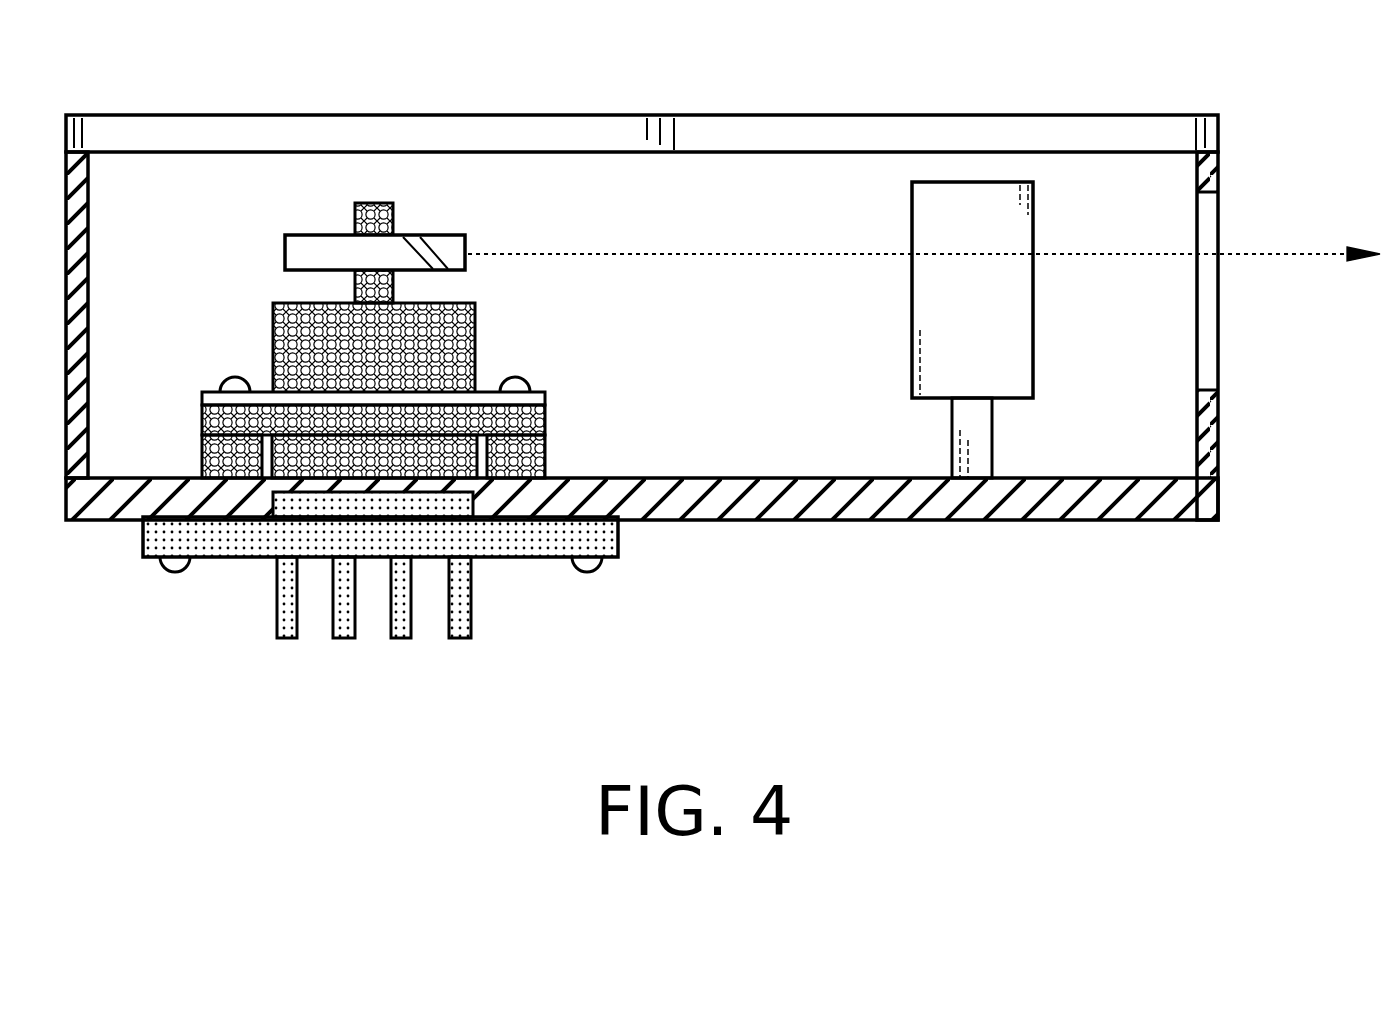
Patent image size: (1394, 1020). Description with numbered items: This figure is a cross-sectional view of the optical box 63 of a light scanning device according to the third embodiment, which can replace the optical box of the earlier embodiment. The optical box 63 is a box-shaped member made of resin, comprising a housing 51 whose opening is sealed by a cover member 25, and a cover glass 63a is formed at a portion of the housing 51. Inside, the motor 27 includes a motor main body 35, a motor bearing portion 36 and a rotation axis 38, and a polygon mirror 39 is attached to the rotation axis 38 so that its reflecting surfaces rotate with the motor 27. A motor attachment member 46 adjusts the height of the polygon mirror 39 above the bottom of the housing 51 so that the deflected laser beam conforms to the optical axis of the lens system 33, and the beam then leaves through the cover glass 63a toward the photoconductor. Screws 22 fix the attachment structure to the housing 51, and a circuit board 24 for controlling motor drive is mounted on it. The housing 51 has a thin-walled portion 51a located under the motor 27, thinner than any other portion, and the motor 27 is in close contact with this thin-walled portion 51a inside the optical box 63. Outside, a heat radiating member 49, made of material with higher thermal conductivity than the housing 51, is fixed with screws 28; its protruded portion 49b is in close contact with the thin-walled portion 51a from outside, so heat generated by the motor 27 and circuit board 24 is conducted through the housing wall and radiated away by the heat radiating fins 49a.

The screws 22 is at (517, 380).
The circuit board 24 is at (213, 393).
The cover member 25 is at (712, 132).
The motor 27 is at (379, 275).
The screws 28 is at (165, 568).
The lens system 33 is at (1018, 328).
The motor main body 35 is at (275, 318).
The motor bearing portion 36 is at (200, 453).
The rotation axis 38 is at (357, 217).
The polygon mirror 39 is at (423, 238).
The motor attachment member 46 is at (547, 420).
The heat radiating member 49 is at (355, 594).
The heat radiating fins 49a is at (343, 630).
The protruded portion 49b is at (283, 494).
The housing 51 is at (1083, 520).
The thin-walled portion 51a is at (438, 483).
The optical box 63 is at (699, 327).
The cover glass 63a is at (1218, 343).